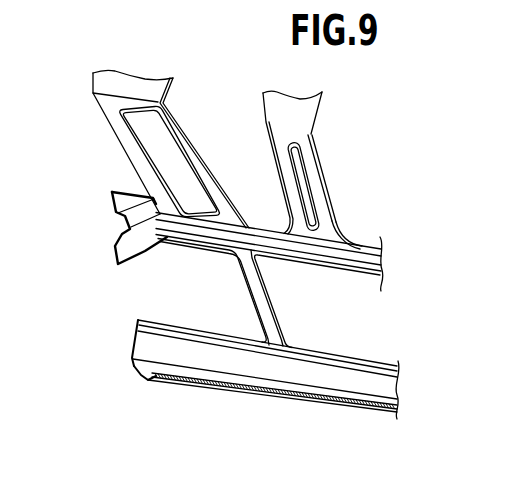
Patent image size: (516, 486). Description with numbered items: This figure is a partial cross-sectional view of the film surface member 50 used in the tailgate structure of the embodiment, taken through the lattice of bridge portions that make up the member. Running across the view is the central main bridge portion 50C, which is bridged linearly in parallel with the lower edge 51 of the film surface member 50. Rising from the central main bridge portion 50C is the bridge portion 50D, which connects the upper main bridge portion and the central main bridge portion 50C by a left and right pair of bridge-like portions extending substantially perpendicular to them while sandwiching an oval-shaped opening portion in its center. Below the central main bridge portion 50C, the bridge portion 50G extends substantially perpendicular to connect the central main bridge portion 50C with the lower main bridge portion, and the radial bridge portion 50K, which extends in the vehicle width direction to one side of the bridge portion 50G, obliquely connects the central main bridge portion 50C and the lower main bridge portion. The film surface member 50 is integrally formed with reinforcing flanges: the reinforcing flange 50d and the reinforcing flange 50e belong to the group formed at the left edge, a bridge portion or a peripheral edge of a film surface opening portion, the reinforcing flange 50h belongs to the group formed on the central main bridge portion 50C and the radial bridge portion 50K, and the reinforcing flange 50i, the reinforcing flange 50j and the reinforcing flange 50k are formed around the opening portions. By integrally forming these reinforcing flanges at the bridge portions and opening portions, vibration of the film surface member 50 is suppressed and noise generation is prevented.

The film surface member 50 is at (389, 430).
The central main bridge portion 50C is at (170, 195).
The bridge portion 50D is at (308, 142).
The bridge portion 50G is at (266, 303).
The radial bridge portion 50K is at (160, 242).
The reinforcing flange 50d is at (167, 130).
The reinforcing flange 50e is at (268, 228).
The reinforcing flange 50h is at (117, 250).
The reinforcing flange 50i is at (147, 318).
The reinforcing flange 50j is at (373, 363).
The reinforcing flange 50k is at (332, 227).
The lower edge 51 is at (157, 377).